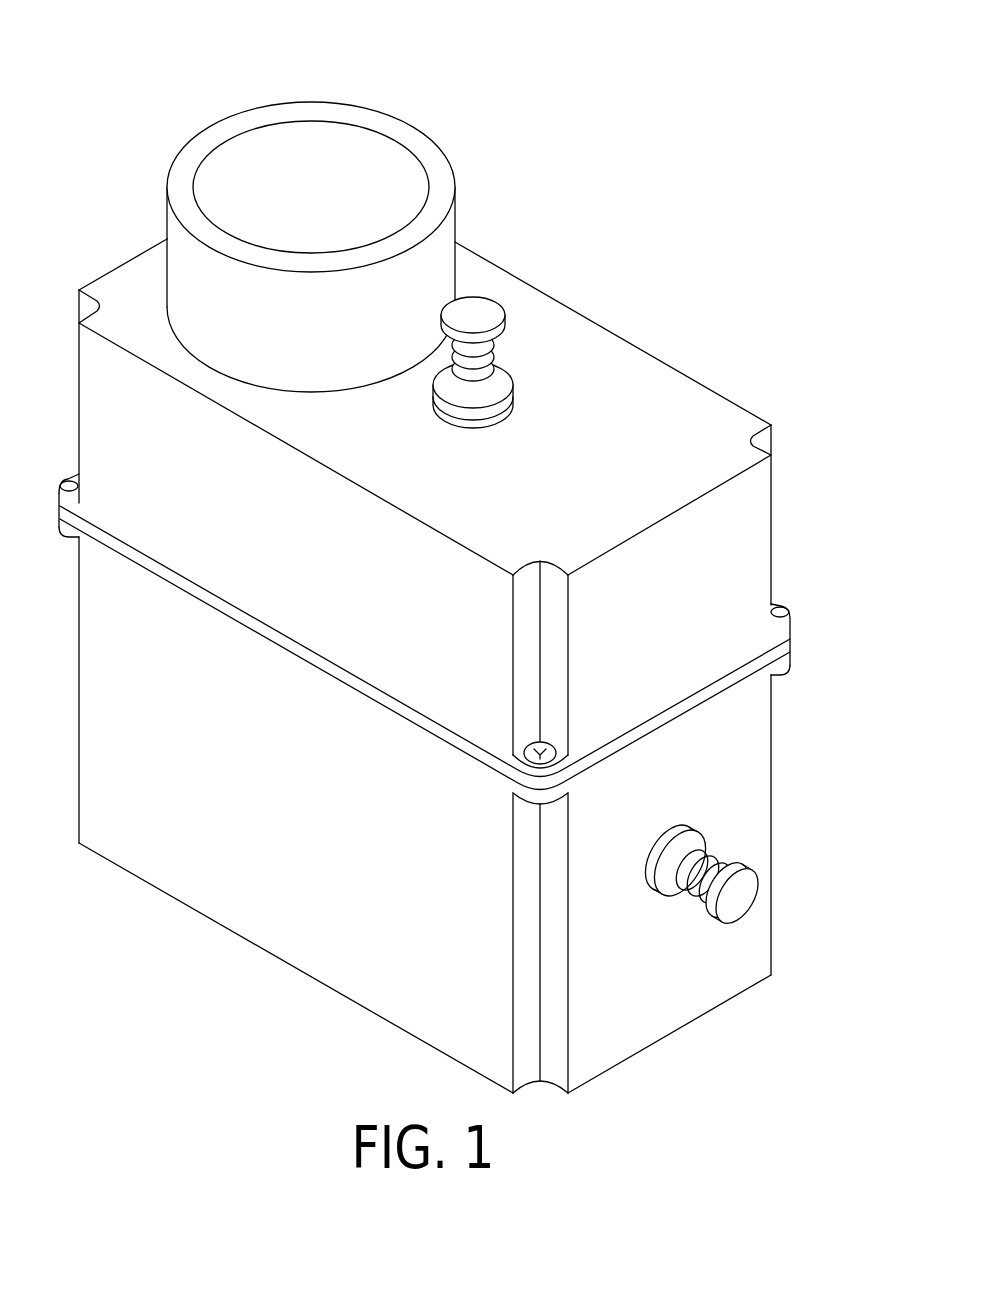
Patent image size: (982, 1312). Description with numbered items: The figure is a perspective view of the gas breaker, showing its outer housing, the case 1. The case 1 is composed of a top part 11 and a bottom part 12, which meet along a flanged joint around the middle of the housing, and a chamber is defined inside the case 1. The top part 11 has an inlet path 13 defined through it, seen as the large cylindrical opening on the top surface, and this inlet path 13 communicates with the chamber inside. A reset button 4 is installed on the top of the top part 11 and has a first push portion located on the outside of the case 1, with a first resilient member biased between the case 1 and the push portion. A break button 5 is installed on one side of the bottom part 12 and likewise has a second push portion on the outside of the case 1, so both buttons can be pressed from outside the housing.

The case 1 is at (424, 548).
The top part 11 is at (642, 360).
The bottom part 12 is at (348, 978).
The inlet path 13 is at (286, 157).
The reset button 4 is at (488, 314).
The break button 5 is at (744, 900).